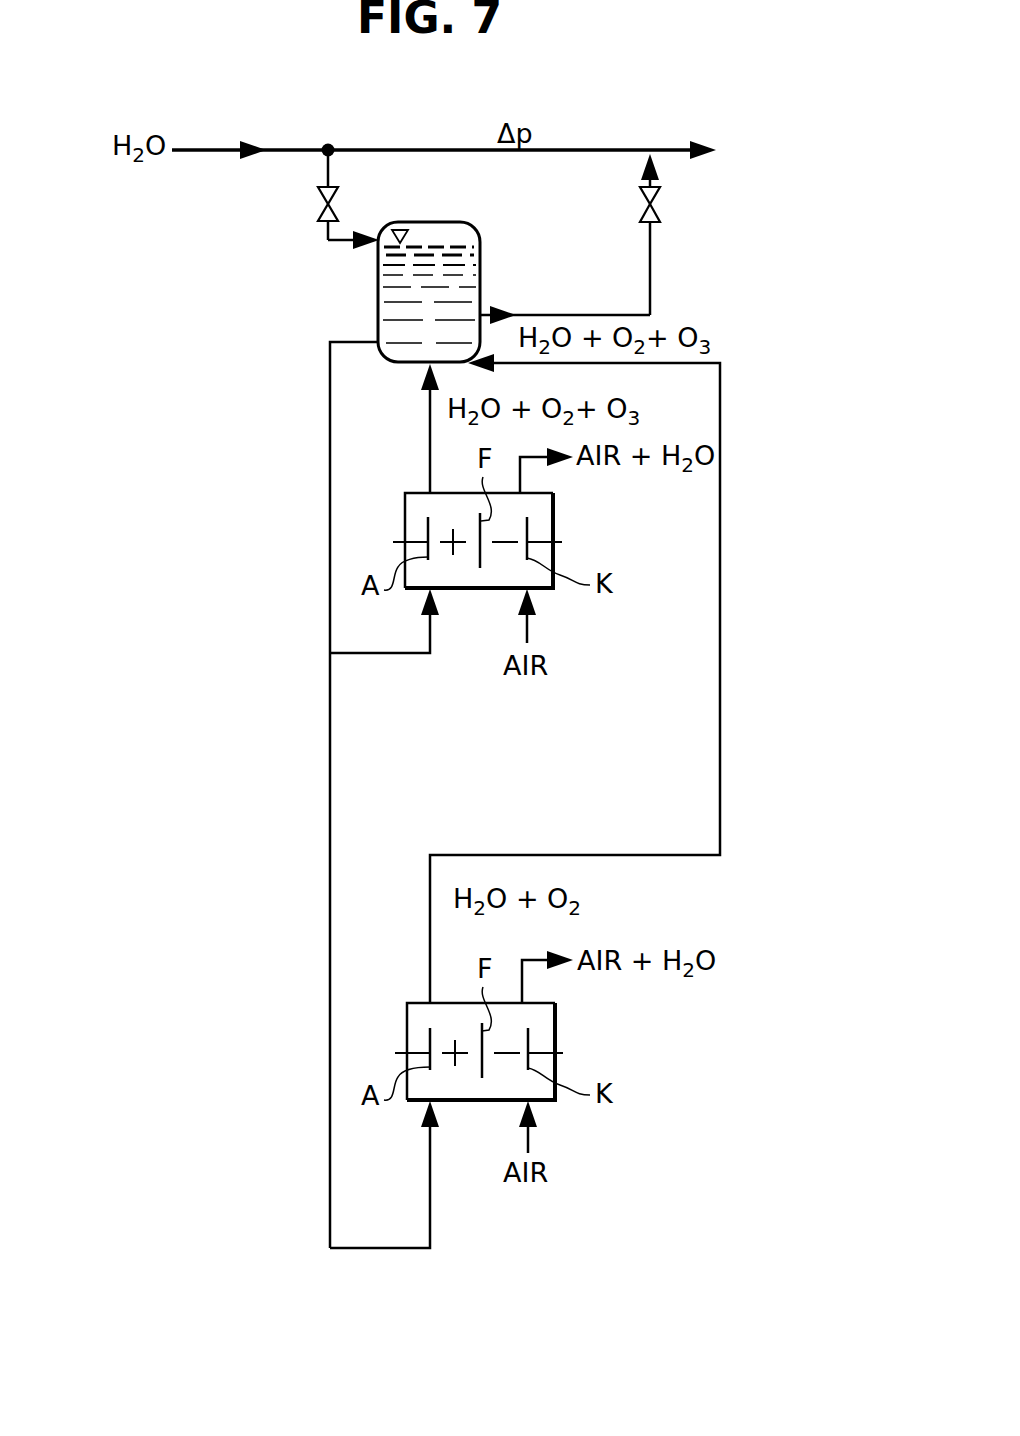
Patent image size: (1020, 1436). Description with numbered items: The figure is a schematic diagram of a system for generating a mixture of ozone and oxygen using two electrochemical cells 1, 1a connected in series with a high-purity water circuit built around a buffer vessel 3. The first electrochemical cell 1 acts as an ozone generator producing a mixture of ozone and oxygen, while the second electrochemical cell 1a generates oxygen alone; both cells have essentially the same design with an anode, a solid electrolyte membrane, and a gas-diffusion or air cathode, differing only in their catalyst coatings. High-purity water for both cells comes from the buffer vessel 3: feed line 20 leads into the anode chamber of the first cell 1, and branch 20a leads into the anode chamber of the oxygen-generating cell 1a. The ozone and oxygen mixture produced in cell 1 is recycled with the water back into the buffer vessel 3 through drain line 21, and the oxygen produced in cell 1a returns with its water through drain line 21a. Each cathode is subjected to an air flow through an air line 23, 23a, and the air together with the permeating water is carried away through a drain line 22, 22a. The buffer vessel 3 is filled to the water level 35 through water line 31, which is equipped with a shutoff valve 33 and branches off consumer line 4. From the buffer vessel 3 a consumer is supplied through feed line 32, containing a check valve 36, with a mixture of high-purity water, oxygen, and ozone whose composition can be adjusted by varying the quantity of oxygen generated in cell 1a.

The consumer line 4 is at (427, 149).
The shutoff valve 33 is at (318, 209).
The water line 31 is at (345, 246).
The buffer vessel 3 is at (364, 300).
The water level 35 is at (420, 240).
The check valve 36 is at (662, 200).
The feed line 32 is at (650, 274).
The drain line 21 is at (428, 449).
The drain line 21a is at (720, 571).
The electrochemical cell 1 is at (572, 555).
The electrochemical cell 1a is at (574, 1065).
The drain line 22 is at (521, 475).
The drain line 22a is at (523, 985).
The air line 23 is at (528, 626).
The air line 23a is at (529, 1136).
The feed line 20 is at (328, 616).
The branch 20a is at (398, 1250).